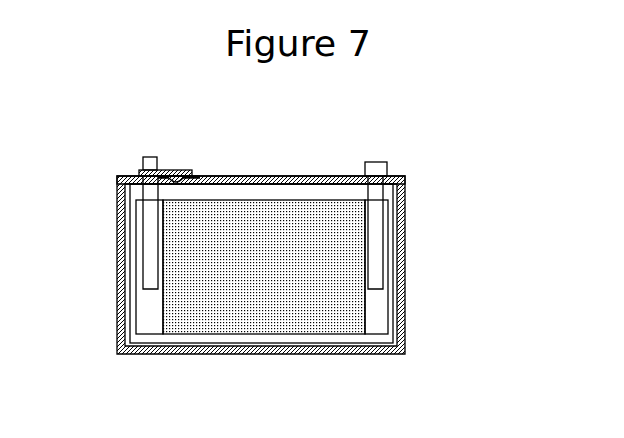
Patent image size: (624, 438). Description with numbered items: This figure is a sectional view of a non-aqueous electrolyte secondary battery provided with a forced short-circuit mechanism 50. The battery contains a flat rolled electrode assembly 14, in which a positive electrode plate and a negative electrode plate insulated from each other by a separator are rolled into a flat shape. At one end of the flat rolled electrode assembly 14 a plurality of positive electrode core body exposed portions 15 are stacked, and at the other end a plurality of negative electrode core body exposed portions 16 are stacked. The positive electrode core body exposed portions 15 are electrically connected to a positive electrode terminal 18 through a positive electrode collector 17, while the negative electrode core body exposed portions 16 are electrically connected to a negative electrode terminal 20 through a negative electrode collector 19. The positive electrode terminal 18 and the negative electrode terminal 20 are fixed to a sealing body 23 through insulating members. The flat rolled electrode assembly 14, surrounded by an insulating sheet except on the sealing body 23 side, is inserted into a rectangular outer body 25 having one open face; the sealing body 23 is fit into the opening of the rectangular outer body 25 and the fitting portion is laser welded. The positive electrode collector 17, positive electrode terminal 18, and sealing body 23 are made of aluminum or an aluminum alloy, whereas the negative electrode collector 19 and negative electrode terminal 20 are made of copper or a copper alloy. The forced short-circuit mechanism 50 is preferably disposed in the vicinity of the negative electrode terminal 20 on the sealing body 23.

The flat rolled electrode assembly 14 is at (225, 313).
The positive electrode core body exposed portion 15 is at (377, 305).
The negative electrode core body exposed portion 16 is at (152, 322).
The positive electrode collector 17 is at (378, 213).
The positive electrode terminal 18 is at (387, 163).
The negative electrode collector 19 is at (150, 230).
The negative electrode terminal 20 is at (150, 156).
The sealing body 23 is at (290, 177).
The rectangular outer body 25 is at (121, 288).
The forced short-circuit mechanism 50 is at (172, 163).